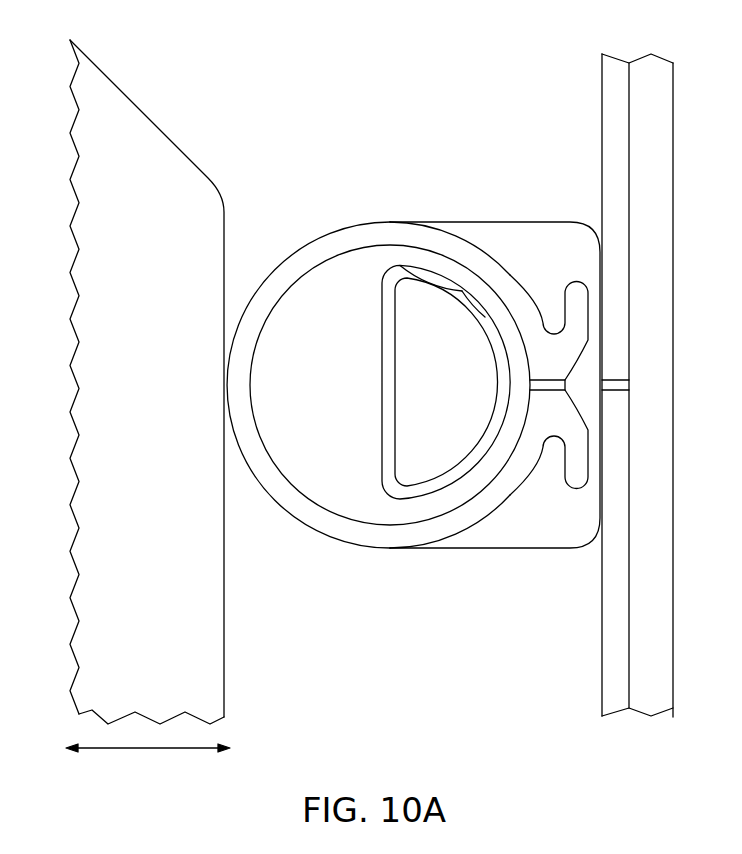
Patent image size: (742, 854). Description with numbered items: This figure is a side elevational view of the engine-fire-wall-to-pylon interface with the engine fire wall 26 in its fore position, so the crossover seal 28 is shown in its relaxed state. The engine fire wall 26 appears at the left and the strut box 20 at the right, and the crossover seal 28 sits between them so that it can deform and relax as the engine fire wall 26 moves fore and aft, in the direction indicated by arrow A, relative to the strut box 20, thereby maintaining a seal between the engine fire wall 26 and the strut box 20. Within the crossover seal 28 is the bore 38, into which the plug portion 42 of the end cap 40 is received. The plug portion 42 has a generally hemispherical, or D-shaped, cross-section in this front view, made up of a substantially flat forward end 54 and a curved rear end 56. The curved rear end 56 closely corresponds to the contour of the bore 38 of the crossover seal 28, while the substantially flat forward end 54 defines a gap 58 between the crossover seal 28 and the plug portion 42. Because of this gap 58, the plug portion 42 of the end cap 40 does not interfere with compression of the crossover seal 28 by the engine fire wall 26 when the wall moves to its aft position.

The strut box 20 is at (660, 126).
The engine fire wall 26 is at (165, 149).
The crossover seal 28 is at (493, 223).
The bore 38 is at (283, 296).
The end cap 40 is at (462, 290).
The plug portion 42 is at (416, 265).
The substantially flat forward end 54 is at (382, 400).
The curved rear end 56 is at (485, 317).
The gap 58 is at (351, 273).
The arrow A is at (147, 750).